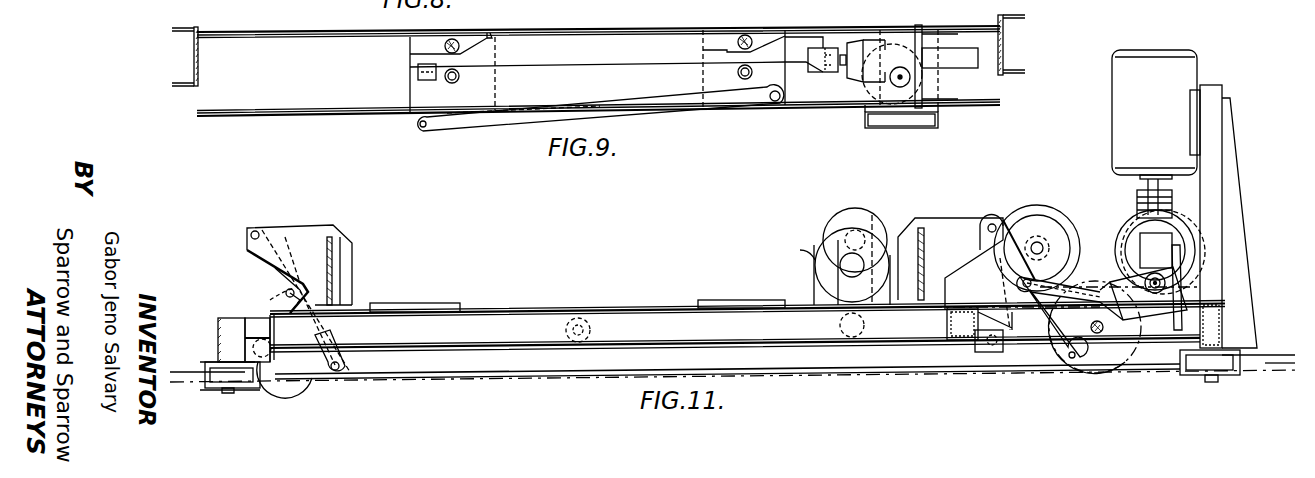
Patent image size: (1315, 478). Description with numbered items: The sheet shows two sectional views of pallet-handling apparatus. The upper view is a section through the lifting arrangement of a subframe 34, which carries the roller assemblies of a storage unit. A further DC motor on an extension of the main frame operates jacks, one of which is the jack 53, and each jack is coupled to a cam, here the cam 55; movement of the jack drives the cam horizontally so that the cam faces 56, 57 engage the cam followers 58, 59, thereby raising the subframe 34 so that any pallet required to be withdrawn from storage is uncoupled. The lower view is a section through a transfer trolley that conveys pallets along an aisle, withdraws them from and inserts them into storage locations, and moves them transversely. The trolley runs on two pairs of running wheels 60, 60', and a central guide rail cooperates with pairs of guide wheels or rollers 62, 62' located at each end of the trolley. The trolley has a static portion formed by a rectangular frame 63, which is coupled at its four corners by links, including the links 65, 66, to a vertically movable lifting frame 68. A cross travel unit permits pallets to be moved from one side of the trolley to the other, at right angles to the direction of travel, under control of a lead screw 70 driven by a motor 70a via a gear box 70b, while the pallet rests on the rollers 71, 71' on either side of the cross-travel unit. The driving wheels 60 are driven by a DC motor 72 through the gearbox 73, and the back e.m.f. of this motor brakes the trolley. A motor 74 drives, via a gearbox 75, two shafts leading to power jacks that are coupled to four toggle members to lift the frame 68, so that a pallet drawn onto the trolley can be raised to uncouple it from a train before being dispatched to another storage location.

In FIG. 9, the subframe 34 is at (303, 48).
In FIG. 9, the jack 53 is at (889, 40).
In FIG. 9, the cam 55 is at (622, 48).
In FIG. 9, the cam face 56 is at (496, 36).
In FIG. 9, the cam face 57 is at (767, 40).
In FIG. 9, the cam follower 58 is at (458, 41).
In FIG. 9, the cam follower 59 is at (740, 35).
In FIG. 11, the running wheel 60 is at (1095, 340).
In FIG. 11, the running wheel 60' is at (297, 376).
In FIG. 11, the guide wheel 62 is at (1216, 375).
In FIG. 11, the guide wheel 62' is at (246, 387).
In FIG. 11, the rectangular frame 63 is at (220, 330).
In FIG. 11, the link 65 is at (272, 278).
In FIG. 11, the link 66 is at (1046, 328).
In FIG. 11, the lifting frame 68 is at (651, 320).
In FIG. 11, the lead screw 70 is at (574, 318).
In FIG. 11, the motor 70a is at (816, 262).
In FIG. 11, the gear box 70b is at (866, 212).
In FIG. 11, the roller 71 is at (741, 292).
In FIG. 11, the roller 71' is at (415, 297).
In FIG. 11, the DC motor 72 is at (1028, 210).
In FIG. 11, the gearbox 73 is at (1130, 225).
In FIG. 11, the motor 74 is at (1116, 128).
In FIG. 11, the gearbox 75 is at (1118, 262).